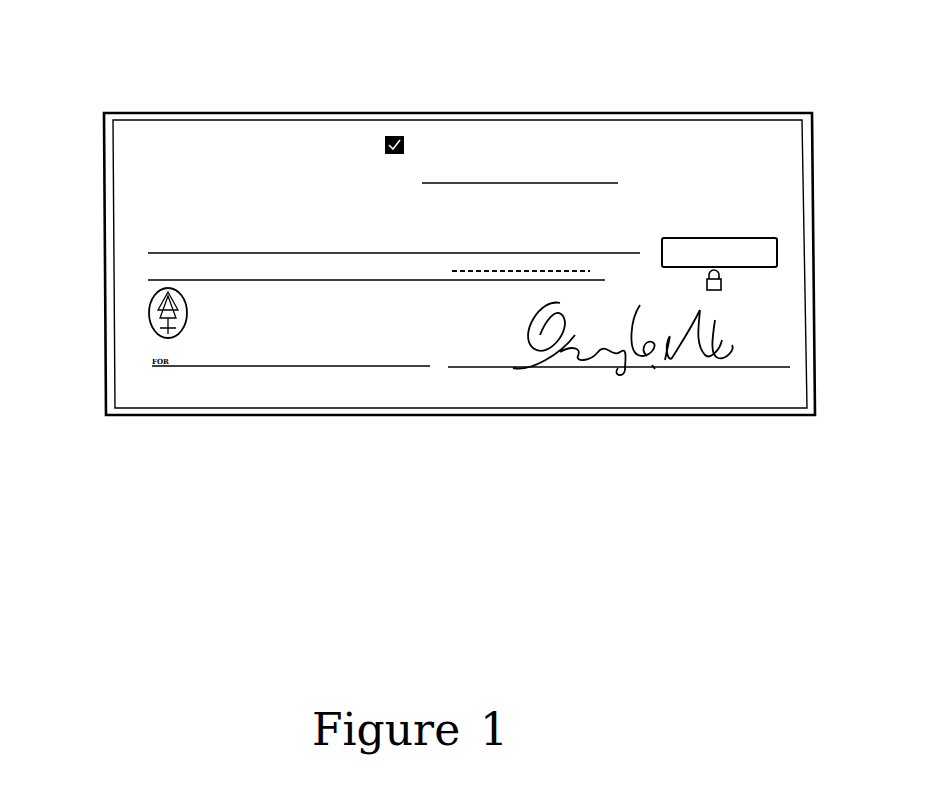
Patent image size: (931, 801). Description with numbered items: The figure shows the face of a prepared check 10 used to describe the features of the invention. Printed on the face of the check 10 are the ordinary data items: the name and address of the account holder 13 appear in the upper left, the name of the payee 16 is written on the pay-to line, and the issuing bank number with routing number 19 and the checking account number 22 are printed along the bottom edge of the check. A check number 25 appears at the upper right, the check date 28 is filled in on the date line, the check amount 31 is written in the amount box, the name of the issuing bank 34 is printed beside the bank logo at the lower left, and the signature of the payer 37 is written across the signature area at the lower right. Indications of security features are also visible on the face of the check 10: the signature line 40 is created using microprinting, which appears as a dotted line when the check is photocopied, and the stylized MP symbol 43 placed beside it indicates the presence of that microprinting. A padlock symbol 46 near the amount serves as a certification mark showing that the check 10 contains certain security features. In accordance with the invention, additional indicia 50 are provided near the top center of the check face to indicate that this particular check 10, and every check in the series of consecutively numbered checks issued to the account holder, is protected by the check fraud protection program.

The check 10 is at (403, 432).
The name and address of the account holder 13 is at (212, 147).
The name of the payee 16 is at (337, 237).
The issuing bank number with routing number 19 is at (291, 399).
The checking account number 22 is at (461, 399).
The check number 25 is at (738, 148).
The check date 28 is at (527, 163).
The check amount 31 is at (690, 238).
The name of the issuing bank 34 is at (180, 313).
The signature of the payer 37 is at (708, 367).
The signature line 40 is at (750, 367).
The stylized MP symbol 43 is at (777, 360).
The padlock symbol 46 is at (714, 292).
The additional indicia 50 is at (397, 136).